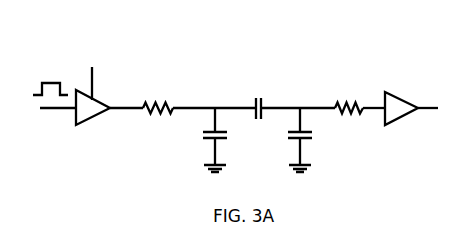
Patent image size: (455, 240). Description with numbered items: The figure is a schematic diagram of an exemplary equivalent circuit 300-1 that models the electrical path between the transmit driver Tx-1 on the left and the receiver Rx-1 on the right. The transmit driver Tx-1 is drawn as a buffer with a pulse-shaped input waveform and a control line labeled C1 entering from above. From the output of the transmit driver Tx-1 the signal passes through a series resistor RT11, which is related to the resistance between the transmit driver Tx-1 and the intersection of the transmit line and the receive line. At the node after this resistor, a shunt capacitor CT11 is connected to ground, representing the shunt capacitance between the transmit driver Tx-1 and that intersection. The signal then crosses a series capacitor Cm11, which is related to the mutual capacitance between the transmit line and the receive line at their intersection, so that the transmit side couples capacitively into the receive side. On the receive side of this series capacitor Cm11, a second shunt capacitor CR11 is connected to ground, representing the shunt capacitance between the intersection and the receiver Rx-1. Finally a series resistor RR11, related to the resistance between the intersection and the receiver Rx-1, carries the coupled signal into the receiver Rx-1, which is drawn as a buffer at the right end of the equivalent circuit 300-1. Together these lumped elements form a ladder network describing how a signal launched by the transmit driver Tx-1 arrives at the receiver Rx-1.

The equivalent circuit 300-1 is at (284, 56).
The transmit driver Tx-1 is at (71, 118).
The receiver Rx-1 is at (411, 123).
The transmitter control input C1 is at (91, 76).
The series resistor RT11 is at (162, 97).
The shunt capacitor CT11 is at (194, 140).
The series capacitor Cm11 is at (257, 99).
The shunt capacitor CR11 is at (318, 140).
The series resistor RR11 is at (342, 97).